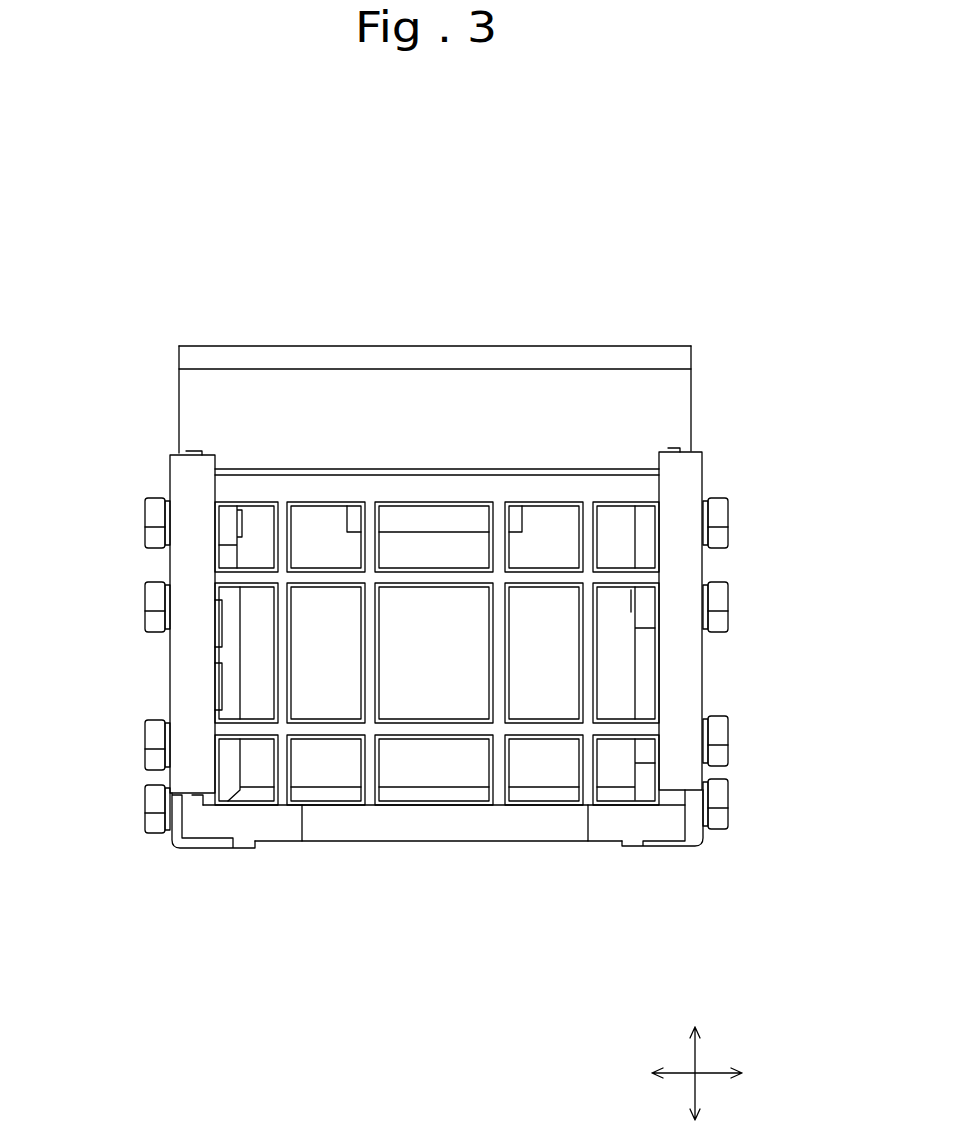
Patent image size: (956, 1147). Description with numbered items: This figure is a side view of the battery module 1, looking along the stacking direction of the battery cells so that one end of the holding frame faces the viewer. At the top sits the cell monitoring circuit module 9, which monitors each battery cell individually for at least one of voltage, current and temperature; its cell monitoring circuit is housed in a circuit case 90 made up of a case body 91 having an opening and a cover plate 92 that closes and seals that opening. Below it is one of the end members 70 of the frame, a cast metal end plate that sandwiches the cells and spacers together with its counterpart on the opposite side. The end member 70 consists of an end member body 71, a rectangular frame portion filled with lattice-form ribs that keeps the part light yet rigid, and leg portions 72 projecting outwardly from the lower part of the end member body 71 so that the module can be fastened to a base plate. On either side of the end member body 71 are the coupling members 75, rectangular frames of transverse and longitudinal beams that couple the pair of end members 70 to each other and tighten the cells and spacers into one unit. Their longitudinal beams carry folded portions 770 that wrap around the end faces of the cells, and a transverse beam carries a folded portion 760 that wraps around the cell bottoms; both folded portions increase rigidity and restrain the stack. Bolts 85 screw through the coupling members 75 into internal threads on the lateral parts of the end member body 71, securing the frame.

The battery module 1 is at (742, 226).
The cell monitoring circuit module 9 is at (481, 299).
The circuit case 90 is at (437, 250).
The case body 91 is at (365, 422).
The cover plate 92 is at (423, 359).
The coupling member 75 is at (146, 685).
The folded portion 770 is at (195, 483).
The bolt 85 is at (150, 600).
The end member 70 is at (433, 862).
The end member body 71 is at (512, 820).
The leg portion 72 is at (342, 825).
The folded portion 760 is at (212, 843).